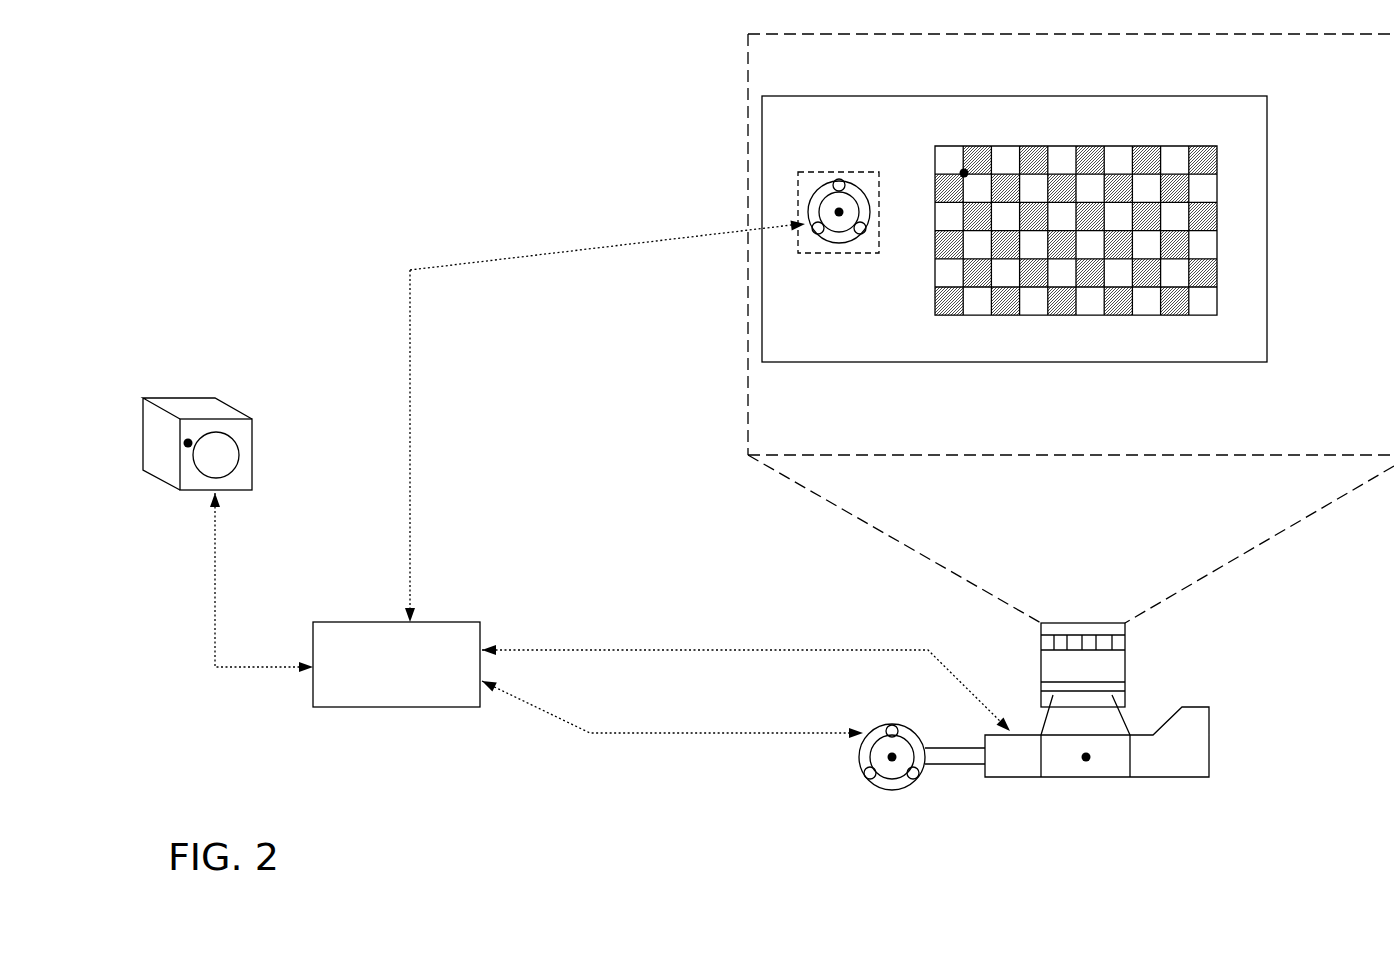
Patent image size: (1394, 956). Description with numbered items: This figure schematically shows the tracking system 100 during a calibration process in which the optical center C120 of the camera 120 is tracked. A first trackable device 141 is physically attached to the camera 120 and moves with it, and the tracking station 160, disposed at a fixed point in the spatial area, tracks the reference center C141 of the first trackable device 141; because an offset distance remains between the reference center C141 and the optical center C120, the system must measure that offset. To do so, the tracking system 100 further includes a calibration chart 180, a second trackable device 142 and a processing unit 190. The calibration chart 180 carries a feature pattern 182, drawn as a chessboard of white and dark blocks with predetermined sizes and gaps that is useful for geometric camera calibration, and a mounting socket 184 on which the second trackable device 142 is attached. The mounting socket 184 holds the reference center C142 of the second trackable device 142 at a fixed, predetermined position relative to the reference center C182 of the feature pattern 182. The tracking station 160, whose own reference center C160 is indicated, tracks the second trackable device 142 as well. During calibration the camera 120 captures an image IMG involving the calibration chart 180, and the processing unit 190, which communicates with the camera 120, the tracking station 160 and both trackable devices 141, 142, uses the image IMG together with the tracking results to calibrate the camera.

The tracking system 100 is at (207, 118).
The image IMG is at (748, 70).
The calibration chart 180 is at (1268, 155).
The feature pattern 182 is at (1165, 146).
The reference center of the feature pattern C182 is at (964, 173).
The second trackable device 142 is at (828, 243).
The reference center of the second trackable device C142 is at (839, 212).
The mounting socket 184 is at (875, 253).
The camera 120 is at (1195, 707).
The optical center of the camera C120 is at (1086, 760).
The first trackable device 141 is at (865, 783).
The reference center of the first trackable device C141 is at (892, 762).
The processing unit 190 is at (445, 622).
The tracking station 160 is at (232, 414).
The reference center of the tracking station C160 is at (188, 443).